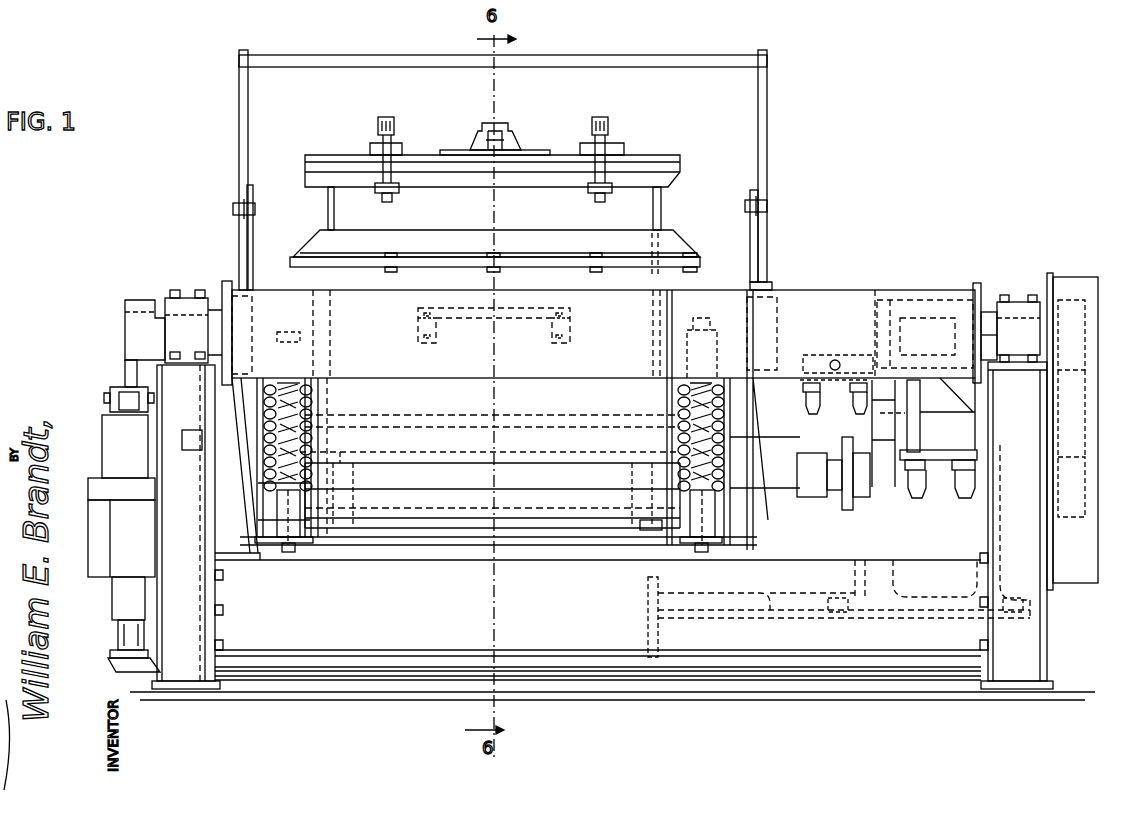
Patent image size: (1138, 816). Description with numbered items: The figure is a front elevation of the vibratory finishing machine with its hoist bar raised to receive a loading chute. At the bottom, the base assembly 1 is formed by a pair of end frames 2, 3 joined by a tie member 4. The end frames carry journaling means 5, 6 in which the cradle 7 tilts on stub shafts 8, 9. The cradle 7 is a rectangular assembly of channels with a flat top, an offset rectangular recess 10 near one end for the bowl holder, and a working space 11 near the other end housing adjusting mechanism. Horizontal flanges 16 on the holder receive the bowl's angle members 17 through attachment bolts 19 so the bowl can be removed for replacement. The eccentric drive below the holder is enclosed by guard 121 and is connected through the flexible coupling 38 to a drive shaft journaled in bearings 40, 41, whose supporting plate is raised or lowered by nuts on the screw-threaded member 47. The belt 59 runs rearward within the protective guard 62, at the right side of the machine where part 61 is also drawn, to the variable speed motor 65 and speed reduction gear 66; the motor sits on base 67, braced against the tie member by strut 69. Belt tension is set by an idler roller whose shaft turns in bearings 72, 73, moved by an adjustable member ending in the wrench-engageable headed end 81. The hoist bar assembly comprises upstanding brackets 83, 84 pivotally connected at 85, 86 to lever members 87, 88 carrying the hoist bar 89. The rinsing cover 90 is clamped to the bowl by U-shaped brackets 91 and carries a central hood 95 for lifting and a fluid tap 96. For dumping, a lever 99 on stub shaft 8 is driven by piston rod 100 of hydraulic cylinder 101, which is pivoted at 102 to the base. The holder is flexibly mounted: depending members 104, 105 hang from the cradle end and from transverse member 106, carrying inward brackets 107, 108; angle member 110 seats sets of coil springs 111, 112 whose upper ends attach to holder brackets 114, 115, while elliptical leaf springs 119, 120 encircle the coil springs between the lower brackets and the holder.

The base assembly 1 is at (640, 688).
The end frame 2 is at (191, 672).
The end frame 3 is at (1022, 672).
The tie member 4 is at (582, 626).
The journaling means 5 is at (184, 298).
The journaling means 6 is at (1014, 326).
The cradle 7 is at (790, 305).
The stub shaft 8 is at (219, 279).
The stub shaft 9 is at (989, 312).
The offset rectangular recess 10 is at (275, 288).
The working space 11 is at (845, 268).
The horizontally extending flanges 16 is at (570, 287).
The angle members 17 is at (656, 262).
The attachment bolts 19 is at (404, 257).
The flexible coupling 38 is at (822, 492).
The bearing 40 is at (915, 493).
The bearing 41 is at (962, 493).
The screw-threaded member 47 is at (912, 398).
The belt 59 is at (851, 512).
The side plate 61 is at (1080, 462).
The protective guard 62 is at (1088, 415).
The variable speed motor 65 is at (836, 563).
The speed reduction gear 66 is at (856, 613).
The motor base 67 is at (736, 620).
The strut 69 is at (647, 600).
The bearing 72 is at (805, 412).
The bearing 73 is at (852, 416).
The headed end 81 is at (838, 358).
The upstanding bracket 83 is at (750, 262).
The upstanding bracket 84 is at (246, 234).
The pivotal connection 85 is at (767, 205).
The pivotal connection 86 is at (236, 204).
The lever member 87 is at (250, 118).
The lever member 88 is at (766, 131).
The hoist bar 89 is at (324, 63).
The rinsing cover 90 is at (640, 158).
The U-shaped bracket 91 is at (386, 194).
The central hood 95 is at (512, 150).
The fluid tap 96 is at (500, 121).
The lever 99 is at (125, 347).
The piston rod 100 is at (114, 398).
The hydraulic cylinder 101 is at (116, 590).
The pivot 102 is at (118, 640).
The depending transversely extending member 104 is at (243, 560).
The depending transversely extending member 105 is at (750, 546).
The transversely extending member 106 is at (757, 305).
The bracket 107 is at (313, 547).
The bracket 108 is at (645, 531).
The angle member 110 is at (560, 530).
The set of coil springs 111 is at (304, 426).
The set of coil springs 112 is at (724, 432).
The bracket 114 is at (276, 388).
The bracket 115 is at (808, 353).
The elliptical leaf spring 119 is at (298, 467).
The elliptical leaf spring 120 is at (698, 530).
The guard 121 is at (440, 541).